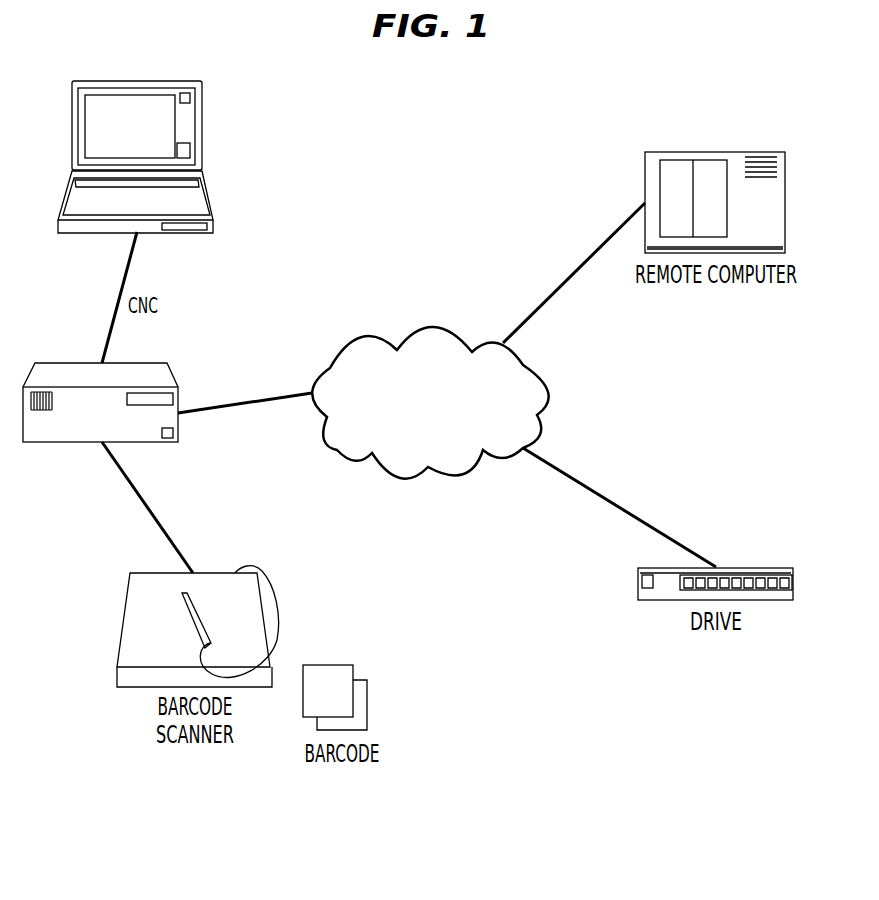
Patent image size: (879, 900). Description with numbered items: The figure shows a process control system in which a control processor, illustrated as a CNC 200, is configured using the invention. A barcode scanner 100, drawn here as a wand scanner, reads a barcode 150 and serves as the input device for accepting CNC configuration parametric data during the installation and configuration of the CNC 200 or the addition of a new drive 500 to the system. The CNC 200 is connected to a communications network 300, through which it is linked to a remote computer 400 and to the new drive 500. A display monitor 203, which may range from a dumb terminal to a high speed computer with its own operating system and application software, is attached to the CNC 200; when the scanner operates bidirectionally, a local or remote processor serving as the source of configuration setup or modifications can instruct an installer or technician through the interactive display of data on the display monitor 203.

The barcode scanner 100 is at (217, 572).
The barcode 150 is at (335, 663).
The CNC 200 is at (173, 375).
The display monitor 203 is at (200, 120).
The communications network 300 is at (550, 395).
The remote computer 400 is at (747, 150).
The new drive 500 is at (752, 569).